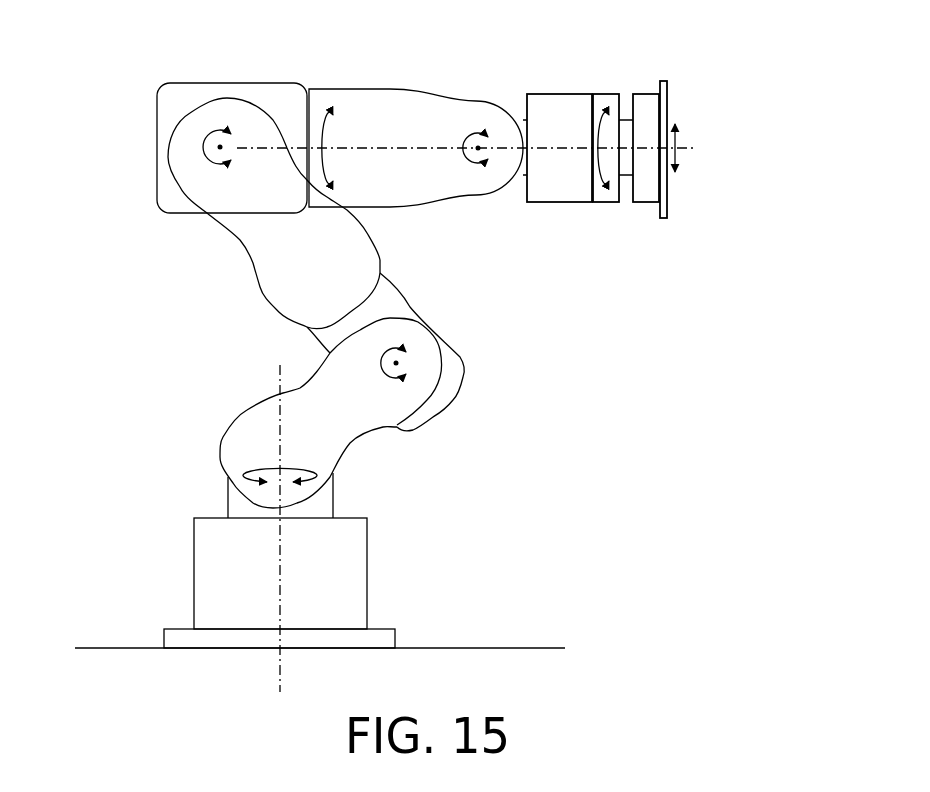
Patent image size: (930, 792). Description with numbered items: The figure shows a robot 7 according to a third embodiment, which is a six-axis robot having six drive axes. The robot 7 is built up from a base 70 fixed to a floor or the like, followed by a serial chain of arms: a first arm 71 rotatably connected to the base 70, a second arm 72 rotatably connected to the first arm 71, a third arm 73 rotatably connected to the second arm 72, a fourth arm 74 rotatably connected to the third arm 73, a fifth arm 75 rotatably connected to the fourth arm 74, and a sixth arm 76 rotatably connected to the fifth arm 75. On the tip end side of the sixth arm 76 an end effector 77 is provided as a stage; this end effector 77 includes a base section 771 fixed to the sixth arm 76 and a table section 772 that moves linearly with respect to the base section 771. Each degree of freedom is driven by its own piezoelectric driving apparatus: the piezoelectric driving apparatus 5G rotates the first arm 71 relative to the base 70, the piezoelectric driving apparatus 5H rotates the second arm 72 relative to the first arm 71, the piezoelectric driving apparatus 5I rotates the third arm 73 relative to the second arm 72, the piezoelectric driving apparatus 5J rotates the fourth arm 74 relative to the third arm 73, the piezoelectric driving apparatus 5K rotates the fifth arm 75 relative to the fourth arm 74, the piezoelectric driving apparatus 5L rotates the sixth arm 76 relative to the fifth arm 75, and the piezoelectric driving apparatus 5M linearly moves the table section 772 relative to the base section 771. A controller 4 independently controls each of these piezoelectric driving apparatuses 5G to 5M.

The robot 7 is at (120, 41).
The controller 4 is at (248, 603).
The base 70 is at (342, 580).
The first arm 71 is at (250, 423).
The second arm 72 is at (293, 263).
The third arm 73 is at (190, 98).
The fourth arm 74 is at (407, 138).
The fifth arm 75 is at (553, 120).
The sixth arm 76 is at (610, 105).
The end effector 77 is at (654, 204).
The base section 771 is at (647, 195).
The table section 772 is at (665, 197).
The piezoelectric driving apparatus 5G is at (253, 535).
The piezoelectric driving apparatus 5H is at (422, 363).
The piezoelectric driving apparatus 5I is at (190, 143).
The piezoelectric driving apparatus 5J is at (293, 112).
The piezoelectric driving apparatus 5K is at (475, 170).
The piezoelectric driving apparatus 5L is at (558, 183).
The piezoelectric driving apparatus 5M is at (648, 105).